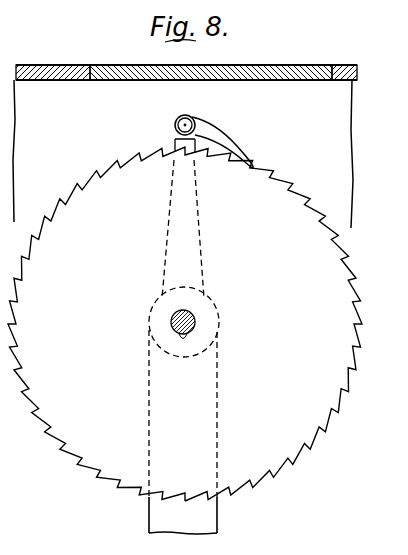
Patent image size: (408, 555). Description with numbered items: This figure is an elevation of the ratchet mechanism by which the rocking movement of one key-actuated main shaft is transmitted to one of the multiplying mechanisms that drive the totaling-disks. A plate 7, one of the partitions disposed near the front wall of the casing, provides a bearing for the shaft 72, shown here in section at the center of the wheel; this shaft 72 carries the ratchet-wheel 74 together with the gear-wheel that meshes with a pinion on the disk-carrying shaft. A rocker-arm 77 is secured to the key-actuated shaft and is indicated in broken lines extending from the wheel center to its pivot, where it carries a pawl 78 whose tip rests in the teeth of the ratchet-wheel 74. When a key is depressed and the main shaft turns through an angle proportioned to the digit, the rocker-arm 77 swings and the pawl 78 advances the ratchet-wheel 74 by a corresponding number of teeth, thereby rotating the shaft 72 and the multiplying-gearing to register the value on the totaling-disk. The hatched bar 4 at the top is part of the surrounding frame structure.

The plate or frame bar 4 is at (94, 65).
The plate 7 is at (203, 523).
The shaft 72 is at (190, 321).
The ratchet-wheel 74 is at (185, 324).
The rocker-arm 77 is at (174, 139).
The pawl 78 is at (213, 138).